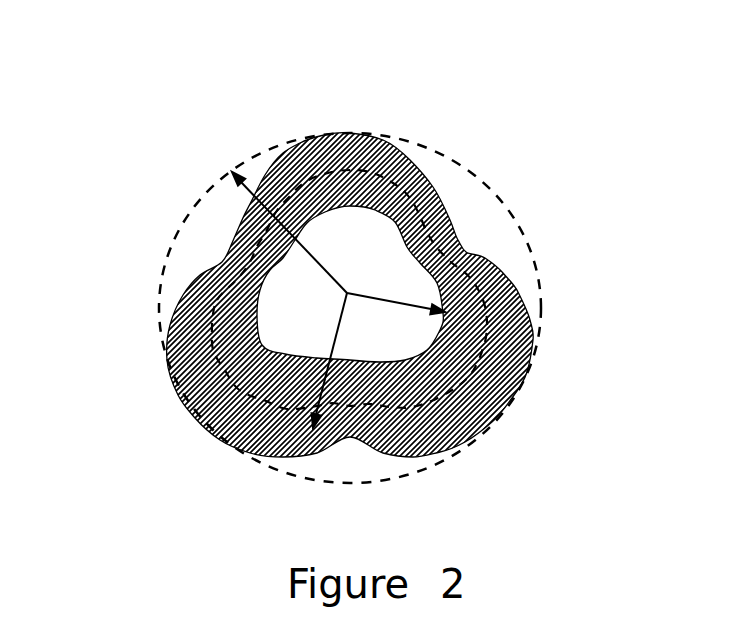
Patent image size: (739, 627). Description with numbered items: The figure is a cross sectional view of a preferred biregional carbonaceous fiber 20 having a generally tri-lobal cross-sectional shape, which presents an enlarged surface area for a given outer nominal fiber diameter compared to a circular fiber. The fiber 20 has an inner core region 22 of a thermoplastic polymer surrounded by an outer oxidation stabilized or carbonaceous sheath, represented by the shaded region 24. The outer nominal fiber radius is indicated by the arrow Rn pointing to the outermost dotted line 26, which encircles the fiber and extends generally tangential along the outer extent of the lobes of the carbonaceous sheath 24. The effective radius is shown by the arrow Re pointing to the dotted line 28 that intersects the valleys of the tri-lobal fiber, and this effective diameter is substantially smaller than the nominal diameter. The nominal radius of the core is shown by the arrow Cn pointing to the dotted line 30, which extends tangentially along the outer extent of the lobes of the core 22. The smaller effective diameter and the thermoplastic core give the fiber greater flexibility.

The biregional fiber 20 is at (493, 140).
The inner core region 22 is at (358, 246).
The outer oxidation stabilized or carbonaceous sheath 24 is at (305, 158).
The outermost dotted line 26 is at (197, 207).
The dotted line 28 is at (297, 422).
The dotted line 30 is at (450, 295).